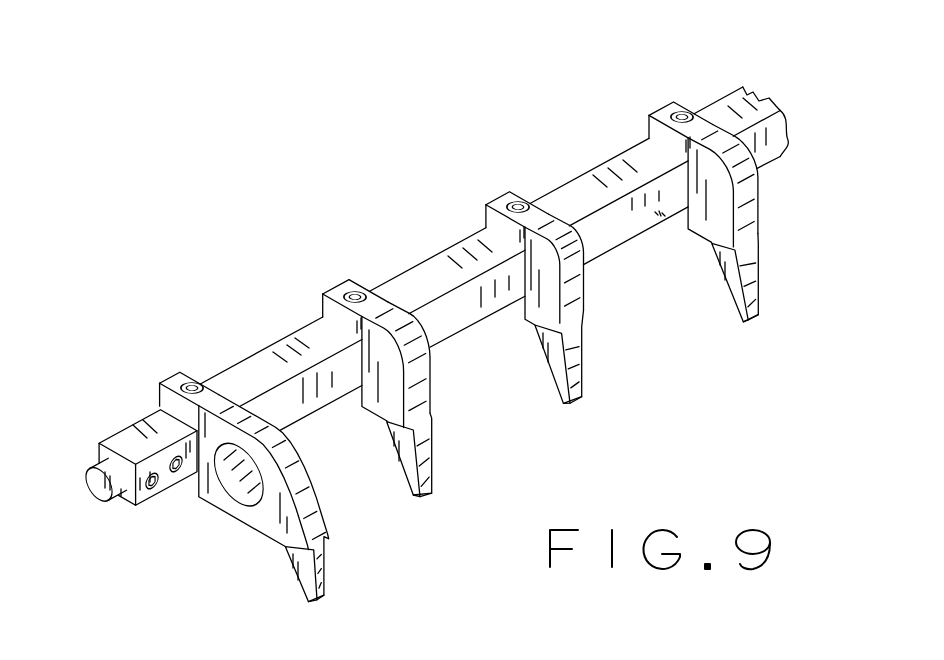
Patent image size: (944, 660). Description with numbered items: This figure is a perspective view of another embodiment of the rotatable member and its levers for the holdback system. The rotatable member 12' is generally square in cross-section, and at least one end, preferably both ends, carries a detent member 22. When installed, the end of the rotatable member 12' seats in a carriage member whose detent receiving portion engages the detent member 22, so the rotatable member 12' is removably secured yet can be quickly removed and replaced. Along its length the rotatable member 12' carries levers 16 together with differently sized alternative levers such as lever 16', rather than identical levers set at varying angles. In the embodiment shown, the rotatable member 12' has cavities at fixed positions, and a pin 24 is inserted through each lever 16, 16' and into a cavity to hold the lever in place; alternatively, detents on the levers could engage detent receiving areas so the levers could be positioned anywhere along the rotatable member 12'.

The rotatable member 12' is at (494, 258).
The lever 16 is at (502, 270).
The lever 16' is at (541, 260).
The detent member 22 is at (173, 458).
The pin 24 is at (192, 383).